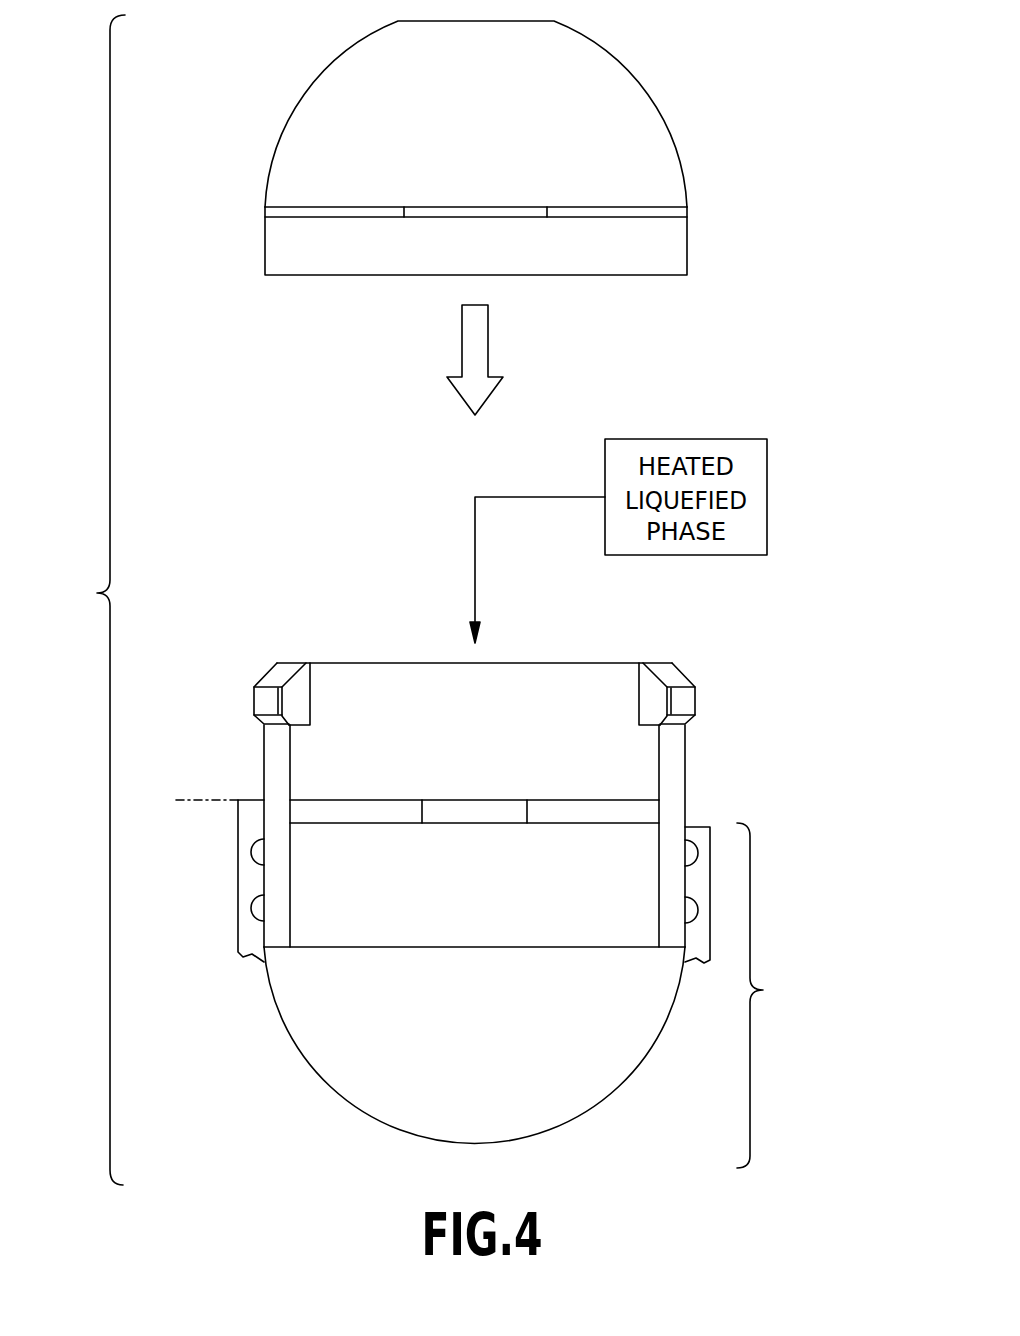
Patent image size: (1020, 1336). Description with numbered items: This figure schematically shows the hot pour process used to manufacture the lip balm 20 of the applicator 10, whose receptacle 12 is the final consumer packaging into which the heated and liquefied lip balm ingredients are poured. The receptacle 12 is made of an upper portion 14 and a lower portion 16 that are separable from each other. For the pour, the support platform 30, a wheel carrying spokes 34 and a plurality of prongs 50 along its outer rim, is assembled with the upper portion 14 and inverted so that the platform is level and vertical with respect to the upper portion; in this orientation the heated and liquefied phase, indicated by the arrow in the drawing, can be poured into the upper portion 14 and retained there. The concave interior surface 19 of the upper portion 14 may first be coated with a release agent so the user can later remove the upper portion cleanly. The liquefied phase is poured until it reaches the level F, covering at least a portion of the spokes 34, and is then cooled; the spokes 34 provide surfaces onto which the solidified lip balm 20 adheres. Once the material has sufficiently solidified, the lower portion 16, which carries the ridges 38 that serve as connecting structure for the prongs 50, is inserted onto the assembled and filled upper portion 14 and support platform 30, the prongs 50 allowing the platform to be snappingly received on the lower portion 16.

The applicator 10 is at (77, 610).
The receptacle 12 is at (475, 151).
The upper portion 14 is at (535, 984).
The lower portion 16 is at (668, 130).
The interior surface 19 is at (586, 1133).
The lip balm 20 is at (453, 1052).
The support platform 30 is at (615, 661).
The spokes 34 is at (630, 798).
The ridges 38 is at (627, 217).
The prongs 50 is at (697, 698).
The level F is at (176, 800).